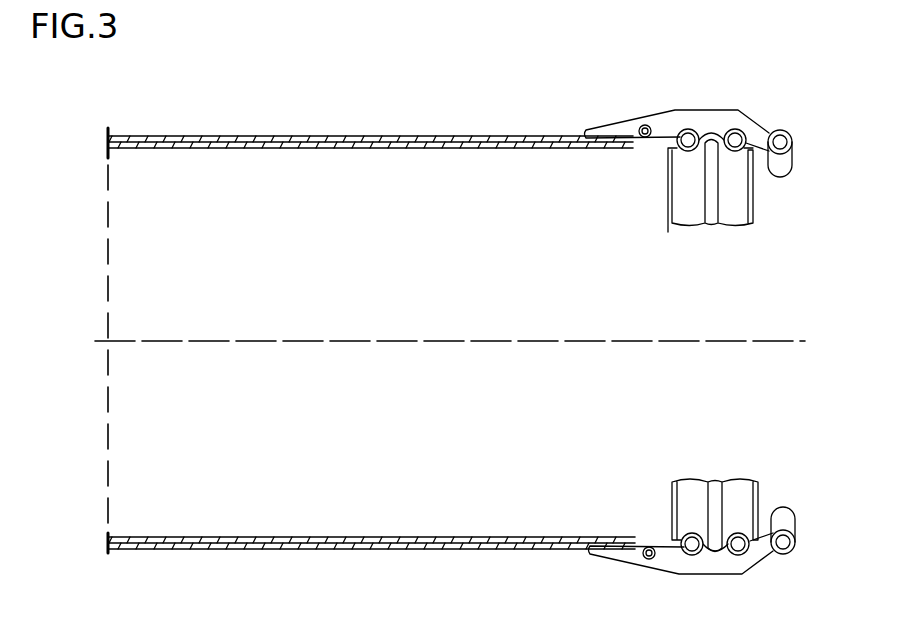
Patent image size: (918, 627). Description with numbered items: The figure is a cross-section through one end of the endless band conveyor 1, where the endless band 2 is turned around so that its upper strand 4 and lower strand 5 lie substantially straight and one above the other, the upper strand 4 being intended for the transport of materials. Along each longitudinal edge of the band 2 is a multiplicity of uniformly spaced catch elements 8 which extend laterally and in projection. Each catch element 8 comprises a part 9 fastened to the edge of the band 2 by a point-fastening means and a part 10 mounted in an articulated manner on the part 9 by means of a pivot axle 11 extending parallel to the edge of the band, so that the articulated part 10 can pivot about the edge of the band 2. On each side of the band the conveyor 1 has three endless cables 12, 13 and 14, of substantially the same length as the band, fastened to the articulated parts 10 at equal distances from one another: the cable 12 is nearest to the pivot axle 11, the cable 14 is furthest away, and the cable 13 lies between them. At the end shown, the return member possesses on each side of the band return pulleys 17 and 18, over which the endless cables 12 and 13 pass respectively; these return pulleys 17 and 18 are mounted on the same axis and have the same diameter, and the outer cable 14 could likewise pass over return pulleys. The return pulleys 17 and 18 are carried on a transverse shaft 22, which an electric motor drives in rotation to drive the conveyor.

The endless band conveyor 1 is at (371, 336).
The endless band 2 is at (302, 134).
The upper strand 4 is at (243, 135).
The lower strand 5 is at (343, 550).
The catch element 8 is at (679, 320).
The fastened part 9 is at (672, 320).
The articulated part 10 is at (708, 118).
The pivot axle 11 is at (640, 124).
The endless cable 12 is at (688, 128).
The endless cable 13 is at (735, 128).
The endless cable 14 is at (778, 135).
The return pulley 17 is at (710, 346).
The return pulley 18 is at (742, 205).
The transverse shaft 22 is at (783, 341).